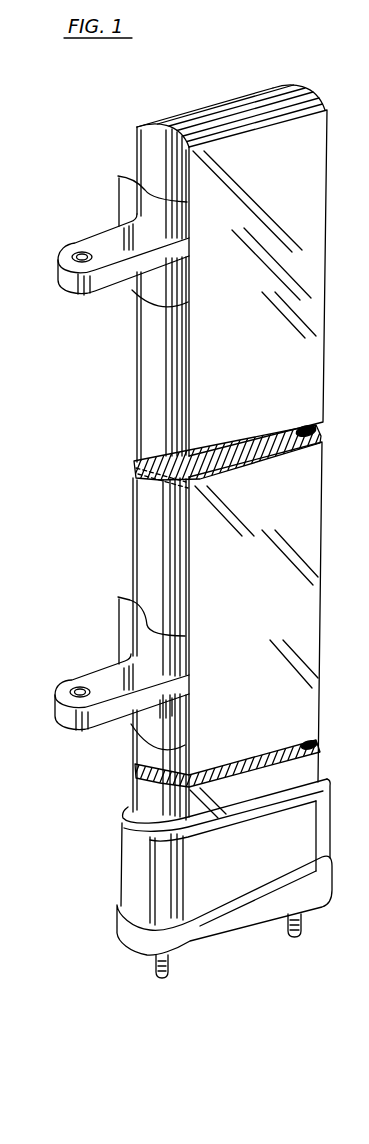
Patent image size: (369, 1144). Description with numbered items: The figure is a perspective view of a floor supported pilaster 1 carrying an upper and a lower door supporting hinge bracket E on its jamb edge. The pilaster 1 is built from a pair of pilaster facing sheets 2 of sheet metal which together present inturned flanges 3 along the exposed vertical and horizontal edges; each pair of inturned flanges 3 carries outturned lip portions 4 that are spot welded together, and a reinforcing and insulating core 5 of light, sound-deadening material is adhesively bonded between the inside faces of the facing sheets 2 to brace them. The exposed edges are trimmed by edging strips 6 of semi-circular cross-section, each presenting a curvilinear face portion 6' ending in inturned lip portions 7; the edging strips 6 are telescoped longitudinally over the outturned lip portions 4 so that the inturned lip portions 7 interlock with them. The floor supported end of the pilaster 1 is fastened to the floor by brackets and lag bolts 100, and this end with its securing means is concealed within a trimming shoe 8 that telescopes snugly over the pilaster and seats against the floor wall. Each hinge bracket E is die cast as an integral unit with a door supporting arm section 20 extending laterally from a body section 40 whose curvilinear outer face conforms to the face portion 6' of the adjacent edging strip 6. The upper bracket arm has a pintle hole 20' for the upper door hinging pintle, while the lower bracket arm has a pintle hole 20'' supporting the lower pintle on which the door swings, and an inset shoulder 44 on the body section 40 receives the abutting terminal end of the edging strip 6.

The floor supported pilaster 1 is at (115, 920).
The pilaster facing sheet 2 is at (307, 159).
The inturned flange 3 is at (322, 108).
The outturned lip portion 4 is at (313, 428).
The reinforcing and insulating core 5 is at (320, 747).
The edging strip 6 is at (221, 503).
The face portion 6' is at (132, 293).
The inturned lip portion 7 is at (133, 470).
The trimming shoe 8 is at (138, 852).
The door supporting arm section 20 is at (114, 489).
The pintle hole 20' is at (74, 240).
The pintle hole 20'' is at (76, 672).
The body section 40 is at (148, 213).
The inset shoulder 44 is at (197, 747).
The brackets and lag bolts 100 is at (153, 978).
The door supporting hinge bracket E is at (71, 294).